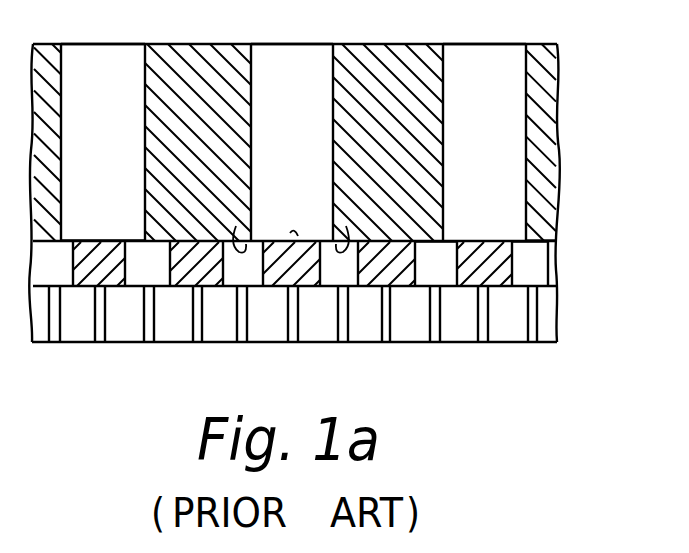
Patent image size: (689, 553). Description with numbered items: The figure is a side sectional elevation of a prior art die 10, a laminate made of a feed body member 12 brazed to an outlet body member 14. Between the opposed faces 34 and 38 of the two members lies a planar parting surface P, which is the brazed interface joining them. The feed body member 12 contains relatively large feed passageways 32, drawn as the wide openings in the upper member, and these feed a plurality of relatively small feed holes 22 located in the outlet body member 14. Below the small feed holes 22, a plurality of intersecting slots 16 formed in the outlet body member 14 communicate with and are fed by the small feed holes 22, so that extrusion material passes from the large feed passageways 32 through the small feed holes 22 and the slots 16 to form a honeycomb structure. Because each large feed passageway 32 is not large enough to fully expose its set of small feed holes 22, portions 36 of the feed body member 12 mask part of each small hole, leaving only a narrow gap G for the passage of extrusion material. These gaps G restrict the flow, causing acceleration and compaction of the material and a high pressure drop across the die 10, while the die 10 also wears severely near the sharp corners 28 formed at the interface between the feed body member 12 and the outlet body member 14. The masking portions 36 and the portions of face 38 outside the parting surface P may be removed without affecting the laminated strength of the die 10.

The prior art die 10 is at (560, 86).
The feed body member 12 is at (560, 145).
The outlet body member 14 is at (557, 268).
The intersecting slots 16 is at (482, 333).
The small feed holes 22 is at (518, 258).
The sharp corners 28 is at (140, 240).
The feed passageways 32 is at (468, 53).
The face of feed body member 34 is at (538, 238).
The masking portions of body plate 36 is at (344, 226).
The face of outlet body member 38 is at (291, 236).
The gap G is at (322, 233).
The parting surface P is at (548, 241).